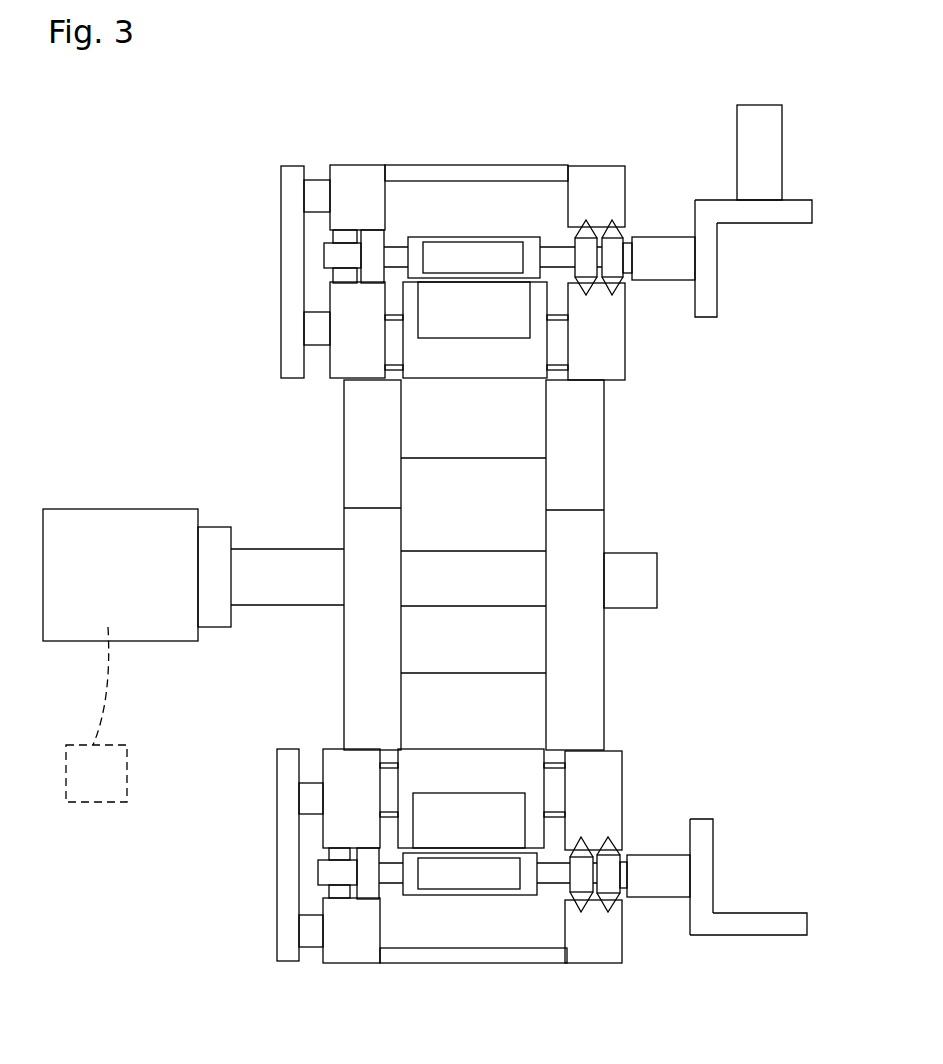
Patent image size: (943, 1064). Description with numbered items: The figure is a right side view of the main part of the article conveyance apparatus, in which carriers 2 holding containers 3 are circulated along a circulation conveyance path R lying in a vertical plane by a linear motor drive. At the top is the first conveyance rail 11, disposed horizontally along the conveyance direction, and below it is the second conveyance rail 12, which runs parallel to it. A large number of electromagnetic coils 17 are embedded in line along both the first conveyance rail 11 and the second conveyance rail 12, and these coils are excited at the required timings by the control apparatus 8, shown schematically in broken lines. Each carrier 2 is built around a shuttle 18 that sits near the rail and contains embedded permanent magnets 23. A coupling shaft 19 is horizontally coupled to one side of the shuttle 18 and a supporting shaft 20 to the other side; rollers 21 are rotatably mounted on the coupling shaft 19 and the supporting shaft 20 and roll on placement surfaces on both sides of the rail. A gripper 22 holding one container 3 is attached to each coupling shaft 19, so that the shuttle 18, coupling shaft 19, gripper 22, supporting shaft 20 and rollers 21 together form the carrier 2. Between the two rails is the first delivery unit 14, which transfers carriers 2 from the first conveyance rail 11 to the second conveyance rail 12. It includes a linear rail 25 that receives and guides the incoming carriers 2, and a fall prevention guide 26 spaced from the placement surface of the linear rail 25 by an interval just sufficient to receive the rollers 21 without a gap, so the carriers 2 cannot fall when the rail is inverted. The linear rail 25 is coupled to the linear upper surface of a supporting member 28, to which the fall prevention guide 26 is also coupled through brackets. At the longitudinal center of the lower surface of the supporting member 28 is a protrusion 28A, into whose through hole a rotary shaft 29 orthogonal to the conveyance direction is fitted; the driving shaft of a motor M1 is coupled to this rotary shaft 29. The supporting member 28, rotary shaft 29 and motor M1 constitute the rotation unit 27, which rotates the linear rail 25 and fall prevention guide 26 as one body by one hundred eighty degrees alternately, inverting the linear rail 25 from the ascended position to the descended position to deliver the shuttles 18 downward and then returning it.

The carrier 2 is at (670, 248).
The container 3 is at (765, 157).
The control apparatus 8 is at (127, 757).
The first conveyance rail 11 is at (520, 366).
The second conveyance rail 12 is at (487, 743).
The first delivery unit 14 is at (243, 192).
The electromagnetic coil 17 is at (470, 317).
The shuttle 18 is at (510, 235).
The coupling shaft 19 is at (650, 263).
The supporting shaft 20 is at (330, 253).
The roller 21 is at (376, 252).
The gripper 22 is at (775, 210).
The permanent magnet 23 is at (462, 256).
The linear rail 25 is at (352, 358).
The fall prevention guide 26 is at (420, 165).
The rotation unit 27 is at (664, 605).
The supporting member 28 is at (358, 447).
The protrusion 28A is at (367, 523).
The rotary shaft 29 is at (650, 583).
The motor M1 is at (118, 533).
The circulation conveyance path R is at (265, 949).